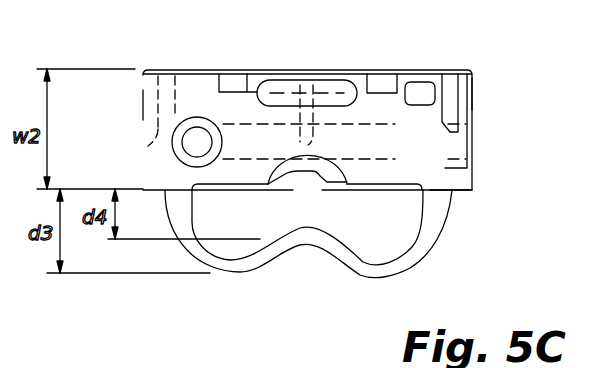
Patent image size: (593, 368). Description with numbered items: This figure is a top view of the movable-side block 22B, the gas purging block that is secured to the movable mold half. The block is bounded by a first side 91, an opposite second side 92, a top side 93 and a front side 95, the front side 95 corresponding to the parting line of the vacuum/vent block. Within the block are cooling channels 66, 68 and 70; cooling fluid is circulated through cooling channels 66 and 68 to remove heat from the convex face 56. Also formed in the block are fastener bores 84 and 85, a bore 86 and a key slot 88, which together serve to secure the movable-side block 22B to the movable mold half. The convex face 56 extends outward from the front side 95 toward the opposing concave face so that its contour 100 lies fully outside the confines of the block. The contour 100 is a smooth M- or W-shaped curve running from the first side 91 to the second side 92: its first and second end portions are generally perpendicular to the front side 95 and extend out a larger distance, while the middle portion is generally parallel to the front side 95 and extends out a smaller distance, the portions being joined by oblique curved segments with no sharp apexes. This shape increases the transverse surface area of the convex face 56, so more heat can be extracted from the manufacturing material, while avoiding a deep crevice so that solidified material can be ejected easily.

The movable-side block 22B is at (152, 78).
The fastener bore 85 is at (163, 95).
The cooling channel 68 is at (195, 141).
The key slot 88 is at (232, 80).
The bore 86 is at (312, 105).
The fastener bore 84 is at (452, 82).
The second side 92 is at (473, 88).
The cooling channel 70 is at (465, 147).
The cooling channel 66 is at (472, 172).
The front side 95 is at (457, 190).
The convex face 56 is at (233, 285).
The contour 100 is at (362, 290).
The first side 91 is at (143, 110).
The top side 93 is at (150, 146).